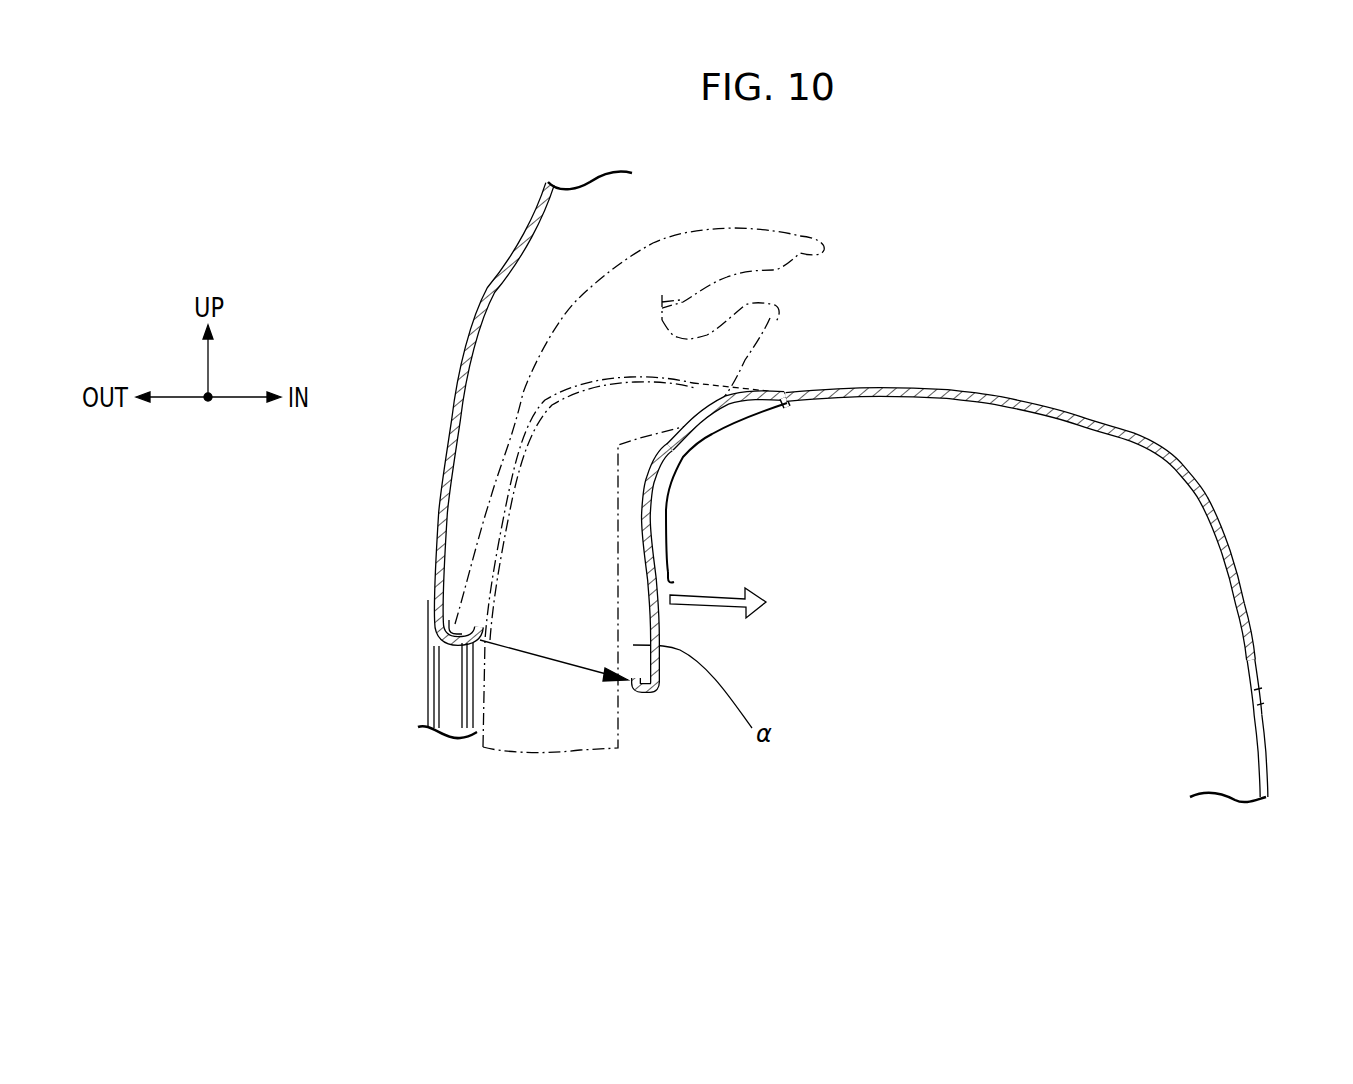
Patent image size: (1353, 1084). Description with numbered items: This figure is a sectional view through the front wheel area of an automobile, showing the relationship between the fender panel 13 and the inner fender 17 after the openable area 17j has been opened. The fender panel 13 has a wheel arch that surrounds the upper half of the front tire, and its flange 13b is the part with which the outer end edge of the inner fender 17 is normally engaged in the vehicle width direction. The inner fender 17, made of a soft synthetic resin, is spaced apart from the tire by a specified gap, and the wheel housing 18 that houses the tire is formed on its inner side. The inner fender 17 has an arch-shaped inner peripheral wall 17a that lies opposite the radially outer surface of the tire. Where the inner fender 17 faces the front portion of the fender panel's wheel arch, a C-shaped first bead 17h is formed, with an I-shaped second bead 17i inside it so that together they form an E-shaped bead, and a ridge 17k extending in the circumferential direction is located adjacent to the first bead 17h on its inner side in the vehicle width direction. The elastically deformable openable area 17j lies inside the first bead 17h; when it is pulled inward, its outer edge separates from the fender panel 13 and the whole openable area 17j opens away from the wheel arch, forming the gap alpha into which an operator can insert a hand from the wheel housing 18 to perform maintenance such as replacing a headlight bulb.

The fender panel 13 is at (480, 455).
The flange 13b is at (450, 693).
The inner fender 17 is at (909, 484).
The inner peripheral wall 17a is at (982, 404).
The first bead 17h is at (790, 405).
The second bead 17i is at (683, 463).
The openable area 17j is at (648, 494).
The ridge 17k is at (703, 412).
The wheel housing 18 is at (1034, 552).